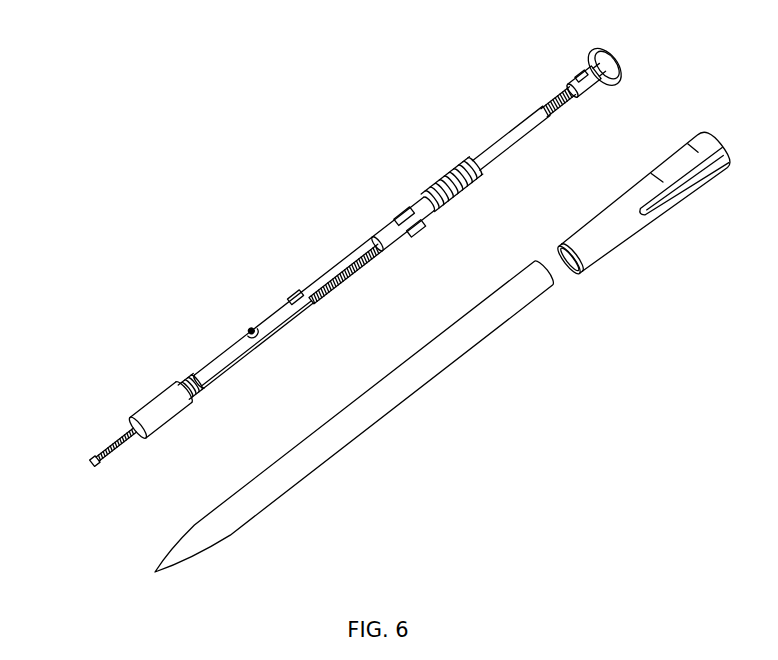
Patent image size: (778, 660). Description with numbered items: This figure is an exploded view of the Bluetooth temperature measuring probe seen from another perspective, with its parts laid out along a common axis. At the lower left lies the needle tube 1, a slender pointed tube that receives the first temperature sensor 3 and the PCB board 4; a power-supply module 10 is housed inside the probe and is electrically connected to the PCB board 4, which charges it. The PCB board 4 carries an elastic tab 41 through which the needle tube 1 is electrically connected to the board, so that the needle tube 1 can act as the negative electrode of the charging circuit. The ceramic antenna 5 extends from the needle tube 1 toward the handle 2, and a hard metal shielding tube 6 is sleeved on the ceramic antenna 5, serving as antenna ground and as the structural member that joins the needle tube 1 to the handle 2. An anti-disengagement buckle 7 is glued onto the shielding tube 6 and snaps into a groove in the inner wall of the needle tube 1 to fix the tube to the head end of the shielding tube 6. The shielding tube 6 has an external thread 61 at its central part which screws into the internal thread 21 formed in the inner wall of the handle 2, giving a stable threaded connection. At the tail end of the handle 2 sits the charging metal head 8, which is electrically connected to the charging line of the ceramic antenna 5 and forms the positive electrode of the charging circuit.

The needle tube 1 is at (417, 370).
The handle 2 is at (625, 228).
The internal thread 21 is at (570, 272).
The first temperature sensor 3 is at (93, 453).
The power-supply module 10 is at (162, 408).
The PCB board 4 is at (212, 362).
The elastic tab 41 is at (250, 320).
The anti-disengagement buckle 7 is at (410, 193).
The external thread 61 is at (460, 163).
The shielding tube 6 is at (507, 140).
The ceramic antenna 5 is at (546, 98).
The charging metal head 8 is at (583, 63).